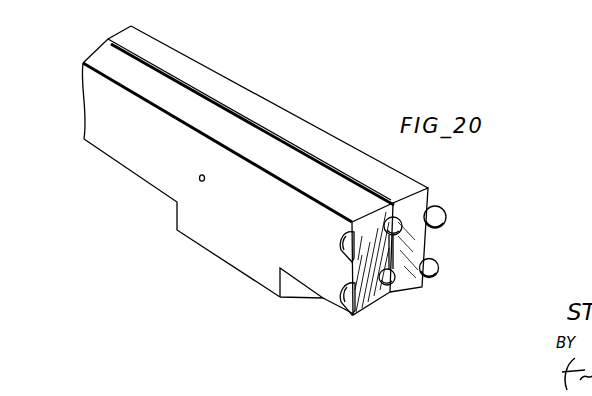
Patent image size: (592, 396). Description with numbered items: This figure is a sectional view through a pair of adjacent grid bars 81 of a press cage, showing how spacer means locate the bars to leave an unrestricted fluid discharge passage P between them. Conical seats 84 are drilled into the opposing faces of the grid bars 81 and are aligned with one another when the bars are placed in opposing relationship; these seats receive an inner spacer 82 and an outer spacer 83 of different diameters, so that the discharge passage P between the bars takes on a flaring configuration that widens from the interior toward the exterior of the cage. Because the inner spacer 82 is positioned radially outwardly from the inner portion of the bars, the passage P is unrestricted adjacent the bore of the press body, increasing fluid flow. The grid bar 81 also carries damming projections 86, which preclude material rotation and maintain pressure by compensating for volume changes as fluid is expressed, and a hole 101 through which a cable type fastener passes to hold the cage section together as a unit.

The grid bar 81 is at (110, 73).
The inner spacer 82 is at (438, 268).
The outer spacer 83 is at (447, 214).
The conical seat 84 is at (351, 295).
The damming projection 86 is at (253, 270).
The hole 101 is at (205, 181).
The fluid discharge passage P is at (388, 286).